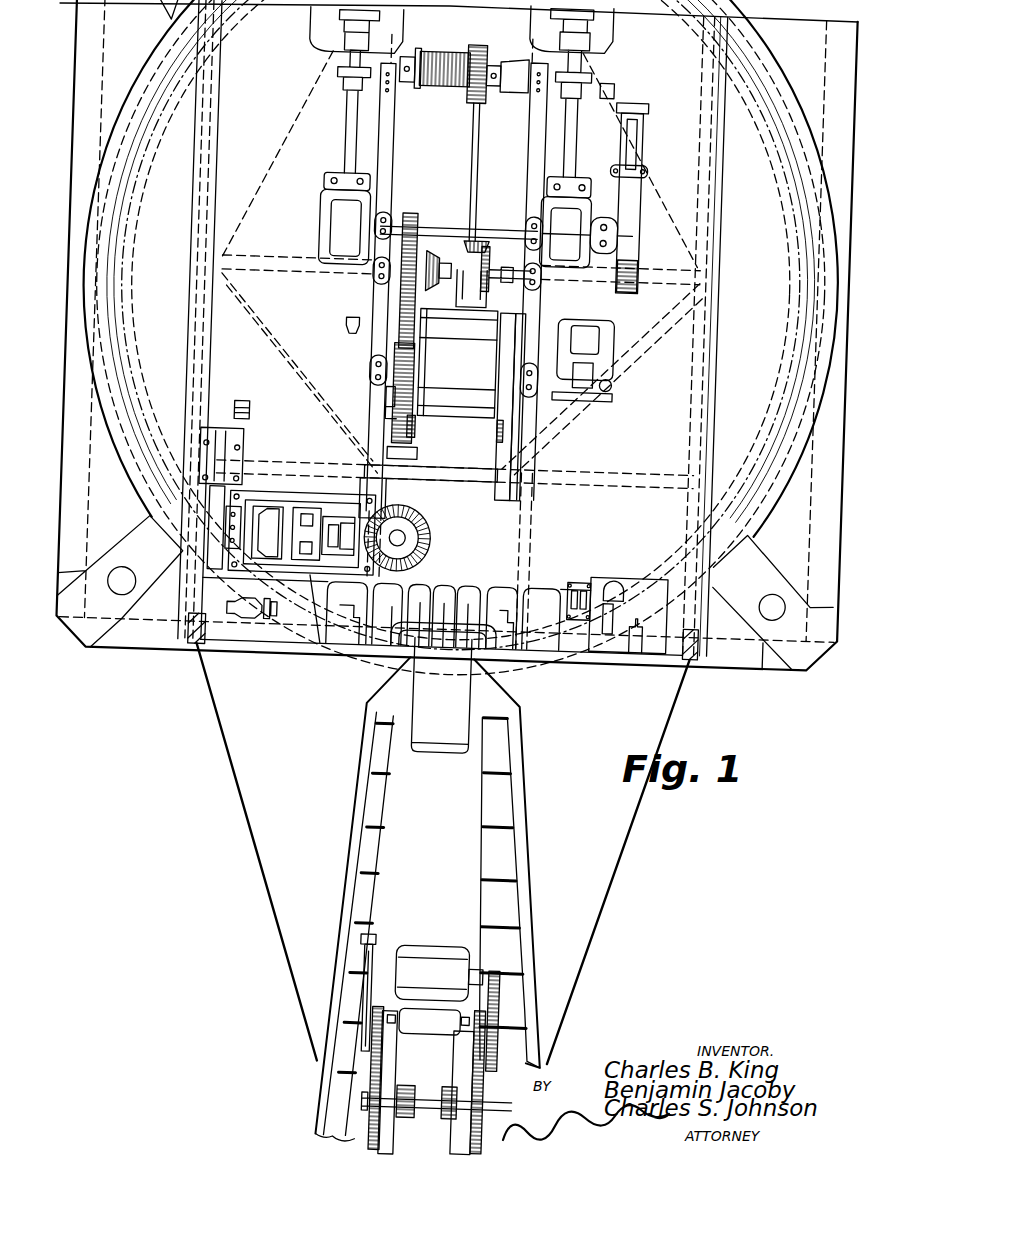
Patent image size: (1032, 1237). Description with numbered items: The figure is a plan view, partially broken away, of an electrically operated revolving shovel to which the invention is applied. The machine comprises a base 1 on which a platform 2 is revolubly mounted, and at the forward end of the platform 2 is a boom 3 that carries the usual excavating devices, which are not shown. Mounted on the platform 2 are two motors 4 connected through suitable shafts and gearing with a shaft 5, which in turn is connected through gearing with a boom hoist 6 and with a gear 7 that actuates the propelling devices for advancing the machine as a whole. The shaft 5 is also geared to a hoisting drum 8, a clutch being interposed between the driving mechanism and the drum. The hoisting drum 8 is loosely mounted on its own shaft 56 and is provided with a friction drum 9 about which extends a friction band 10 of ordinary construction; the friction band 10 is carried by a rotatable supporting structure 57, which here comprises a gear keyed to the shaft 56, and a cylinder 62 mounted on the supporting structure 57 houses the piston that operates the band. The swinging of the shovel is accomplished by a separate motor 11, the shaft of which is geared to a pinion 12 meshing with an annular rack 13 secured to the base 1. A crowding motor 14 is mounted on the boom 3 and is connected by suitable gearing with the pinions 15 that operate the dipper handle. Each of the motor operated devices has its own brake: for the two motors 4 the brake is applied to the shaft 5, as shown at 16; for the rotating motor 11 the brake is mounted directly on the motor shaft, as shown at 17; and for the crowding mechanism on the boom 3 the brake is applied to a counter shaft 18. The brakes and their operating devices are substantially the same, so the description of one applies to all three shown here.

The base 1 is at (788, 653).
The platform 2 is at (707, 647).
The boom 3 is at (503, 764).
The motors 4 is at (324, 10).
The shaft 5 is at (449, 221).
The boom hoist 6 is at (440, 82).
The gear 7 is at (449, 292).
The hoisting drum 8 is at (470, 399).
The friction drum 9 is at (449, 350).
The friction band 10 is at (430, 419).
The motor 11 is at (320, 500).
The pinion 12 is at (460, 565).
The annular rack 13 is at (778, 457).
The crowding motor 14 is at (458, 960).
The pinions 15 is at (486, 1087).
The brake 16 is at (630, 222).
The brake 17 is at (225, 497).
The counter shaft 18 is at (461, 1016).
The shaft 56 is at (383, 365).
The supporting structure 57 is at (422, 449).
The cylinder 62 is at (405, 390).